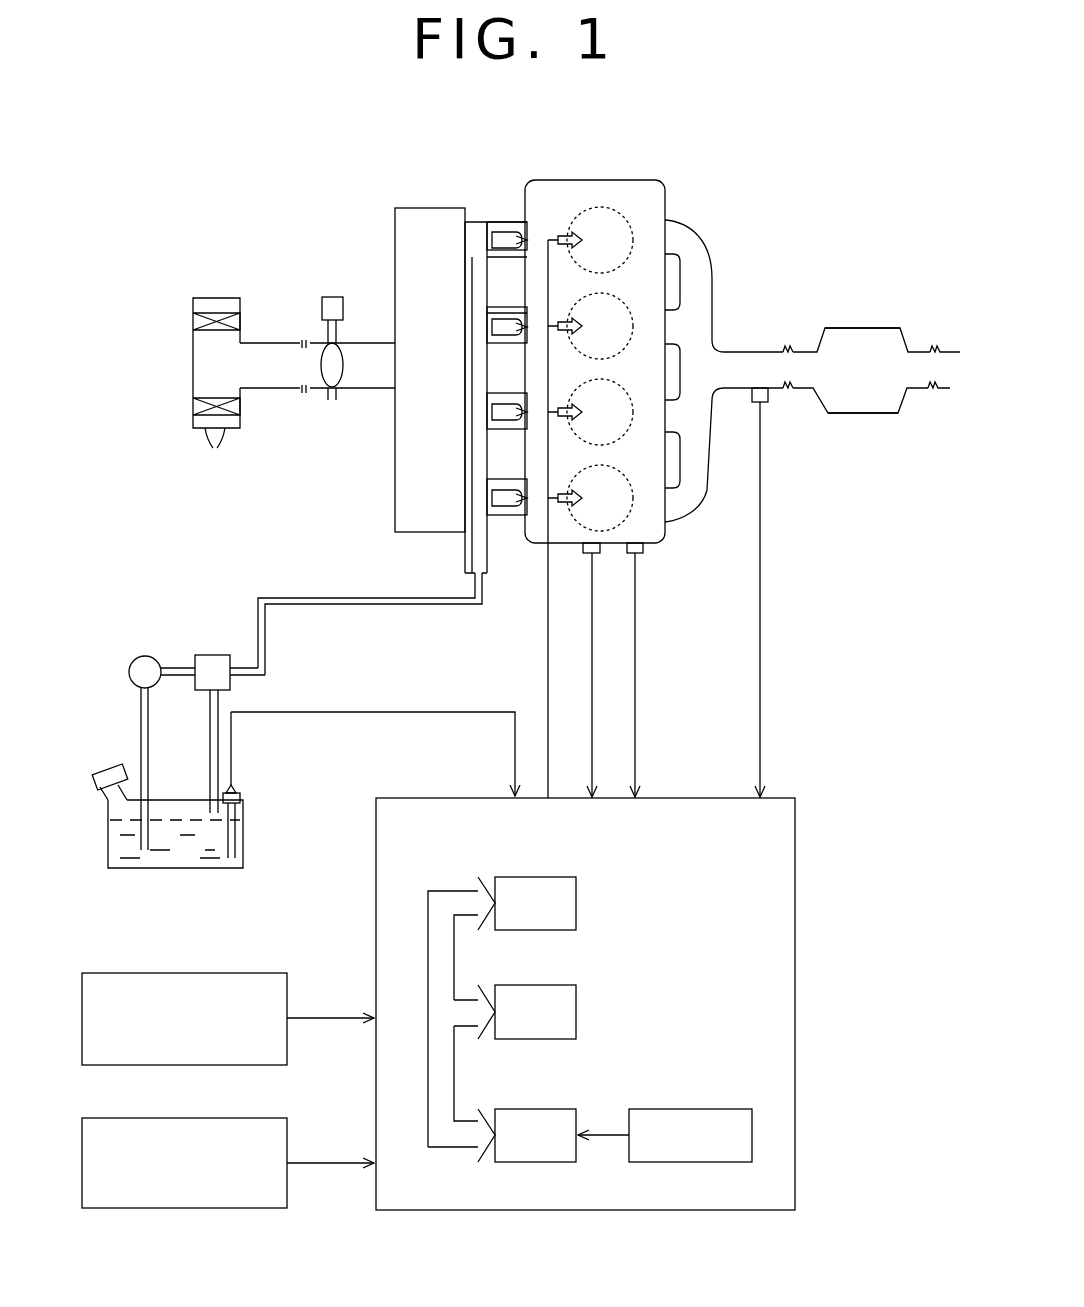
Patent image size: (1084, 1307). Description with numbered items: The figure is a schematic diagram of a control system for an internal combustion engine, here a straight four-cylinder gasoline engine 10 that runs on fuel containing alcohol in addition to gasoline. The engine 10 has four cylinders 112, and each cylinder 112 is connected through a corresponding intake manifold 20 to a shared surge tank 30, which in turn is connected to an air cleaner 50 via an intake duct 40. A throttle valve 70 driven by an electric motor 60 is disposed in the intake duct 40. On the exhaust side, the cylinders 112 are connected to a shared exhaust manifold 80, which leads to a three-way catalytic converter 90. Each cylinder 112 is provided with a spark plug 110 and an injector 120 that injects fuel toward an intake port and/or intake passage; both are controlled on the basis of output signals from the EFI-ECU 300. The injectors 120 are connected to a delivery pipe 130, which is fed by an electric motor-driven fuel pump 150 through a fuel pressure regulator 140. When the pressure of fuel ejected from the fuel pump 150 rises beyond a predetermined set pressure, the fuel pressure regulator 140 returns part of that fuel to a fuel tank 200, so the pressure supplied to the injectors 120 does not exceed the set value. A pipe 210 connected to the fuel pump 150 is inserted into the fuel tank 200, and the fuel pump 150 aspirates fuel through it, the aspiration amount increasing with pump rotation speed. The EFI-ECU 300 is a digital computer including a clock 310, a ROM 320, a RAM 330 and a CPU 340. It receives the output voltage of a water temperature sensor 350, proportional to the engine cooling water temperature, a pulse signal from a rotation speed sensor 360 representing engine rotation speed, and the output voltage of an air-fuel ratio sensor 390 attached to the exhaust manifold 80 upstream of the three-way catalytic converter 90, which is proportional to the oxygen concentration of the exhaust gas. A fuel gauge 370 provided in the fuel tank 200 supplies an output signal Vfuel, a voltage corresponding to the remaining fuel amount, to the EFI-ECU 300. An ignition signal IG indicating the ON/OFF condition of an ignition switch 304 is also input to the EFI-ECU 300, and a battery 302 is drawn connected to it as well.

The engine 10 is at (668, 177).
The intake manifold 20 is at (497, 222).
The surge tank 30 is at (430, 208).
The intake duct 40 is at (372, 343).
The air cleaner 50 is at (192, 362).
The electric motor 60 is at (332, 297).
The throttle valve 70 is at (336, 372).
The exhaust manifold 80 is at (714, 292).
The three-way catalytic converter 90 is at (880, 328).
The spark plug 110 is at (590, 369).
The cylinder 112 is at (635, 240).
The injector 120 is at (492, 241).
The delivery pipe 130 is at (463, 556).
The fuel pressure regulator 140 is at (212, 655).
The fuel pump 150 is at (145, 655).
The fuel tank 200 is at (172, 870).
The pipe 210 is at (141, 728).
The EFI-ECU 300 is at (698, 797).
The battery 302 is at (225, 1118).
The ignition switch 304 is at (228, 973).
The clock 310 is at (692, 1106).
The ROM 320 is at (537, 874).
The RAM 330 is at (537, 982).
The CPU 340 is at (537, 1106).
The water temperature sensor 350 is at (645, 555).
The rotation speed sensor 360 is at (594, 557).
The fuel gauge 370 is at (242, 797).
The air-fuel ratio sensor 390 is at (770, 403).